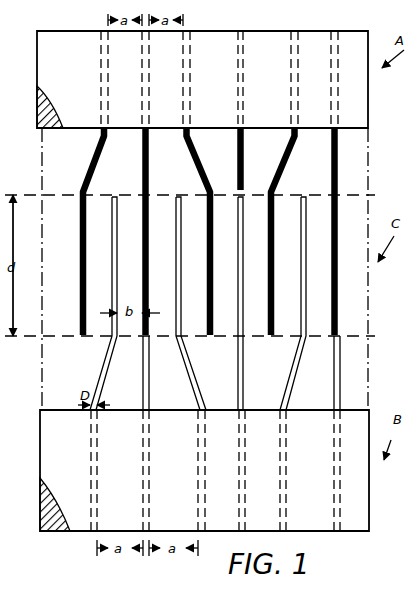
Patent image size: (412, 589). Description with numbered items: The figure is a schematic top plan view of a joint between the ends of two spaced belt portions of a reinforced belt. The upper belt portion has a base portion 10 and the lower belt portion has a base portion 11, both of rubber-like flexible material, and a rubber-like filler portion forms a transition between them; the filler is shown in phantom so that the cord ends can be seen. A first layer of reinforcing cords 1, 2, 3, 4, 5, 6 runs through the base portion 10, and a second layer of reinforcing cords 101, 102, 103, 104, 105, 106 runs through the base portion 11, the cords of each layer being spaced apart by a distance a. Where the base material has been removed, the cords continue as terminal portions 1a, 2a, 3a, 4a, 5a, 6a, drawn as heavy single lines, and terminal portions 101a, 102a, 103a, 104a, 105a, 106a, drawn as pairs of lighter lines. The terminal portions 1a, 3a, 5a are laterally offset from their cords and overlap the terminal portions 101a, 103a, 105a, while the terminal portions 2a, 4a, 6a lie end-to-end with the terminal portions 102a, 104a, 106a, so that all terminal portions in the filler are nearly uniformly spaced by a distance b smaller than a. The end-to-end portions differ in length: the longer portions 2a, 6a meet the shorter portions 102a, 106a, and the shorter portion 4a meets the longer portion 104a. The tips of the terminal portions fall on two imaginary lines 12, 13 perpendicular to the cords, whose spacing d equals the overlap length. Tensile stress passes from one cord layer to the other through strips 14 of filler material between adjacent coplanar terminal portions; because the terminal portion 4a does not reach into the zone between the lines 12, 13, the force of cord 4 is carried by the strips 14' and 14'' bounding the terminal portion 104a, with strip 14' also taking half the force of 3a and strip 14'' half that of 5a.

The reinforcing cord 1 is at (100, 45).
The reinforcing cord 2 is at (140, 60).
The reinforcing cord 3 is at (181, 60).
The reinforcing cord 4 is at (236, 42).
The reinforcing cord 5 is at (289, 42).
The reinforcing cord 6 is at (330, 42).
The base portion 10 is at (357, 102).
The base portion 11 is at (362, 496).
The imaginary line 12 is at (22, 338).
The imaginary line 13 is at (22, 194).
The strip of filler material 14 is at (209, 259).
The strip of filler material 14' is at (226, 244).
The strip of filler material 14'' is at (252, 274).
The terminal portion 1a is at (80, 198).
The terminal portion 2a is at (141, 330).
The terminal portion 3a is at (210, 330).
The terminal portion 4a is at (244, 166).
The terminal portion 5a is at (274, 200).
The terminal portion 6a is at (340, 163).
The reinforcing cord 101 is at (90, 458).
The reinforcing cord 102 is at (142, 492).
The reinforcing cord 103 is at (197, 492).
The reinforcing cord 104 is at (238, 476).
The reinforcing cord 105 is at (279, 484).
The reinforcing cord 106 is at (333, 468).
The terminal portion 101a is at (110, 202).
The terminal portion 102a is at (151, 356).
The terminal portion 103a is at (172, 202).
The terminal portion 104a is at (244, 384).
The terminal portion 105a is at (290, 393).
The terminal portion 106a is at (342, 360).